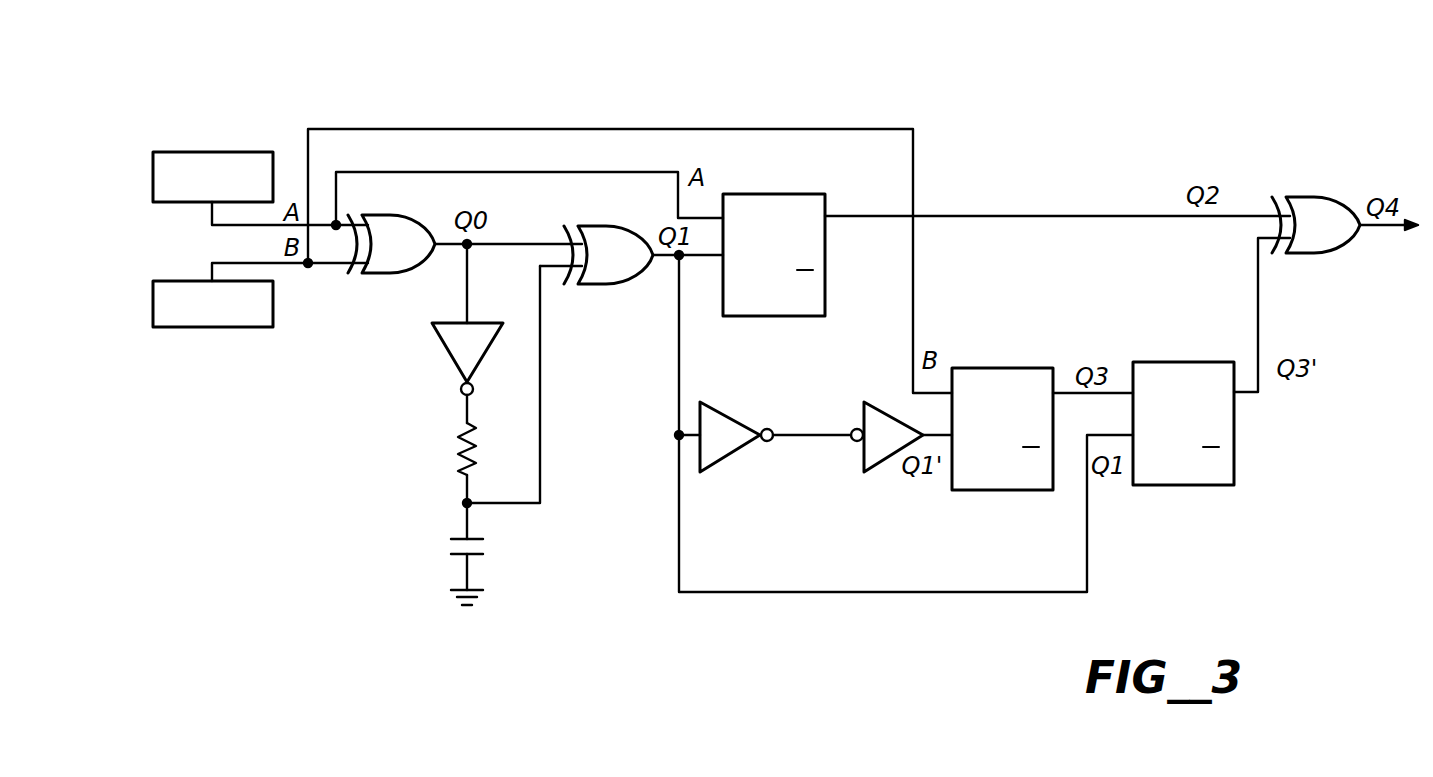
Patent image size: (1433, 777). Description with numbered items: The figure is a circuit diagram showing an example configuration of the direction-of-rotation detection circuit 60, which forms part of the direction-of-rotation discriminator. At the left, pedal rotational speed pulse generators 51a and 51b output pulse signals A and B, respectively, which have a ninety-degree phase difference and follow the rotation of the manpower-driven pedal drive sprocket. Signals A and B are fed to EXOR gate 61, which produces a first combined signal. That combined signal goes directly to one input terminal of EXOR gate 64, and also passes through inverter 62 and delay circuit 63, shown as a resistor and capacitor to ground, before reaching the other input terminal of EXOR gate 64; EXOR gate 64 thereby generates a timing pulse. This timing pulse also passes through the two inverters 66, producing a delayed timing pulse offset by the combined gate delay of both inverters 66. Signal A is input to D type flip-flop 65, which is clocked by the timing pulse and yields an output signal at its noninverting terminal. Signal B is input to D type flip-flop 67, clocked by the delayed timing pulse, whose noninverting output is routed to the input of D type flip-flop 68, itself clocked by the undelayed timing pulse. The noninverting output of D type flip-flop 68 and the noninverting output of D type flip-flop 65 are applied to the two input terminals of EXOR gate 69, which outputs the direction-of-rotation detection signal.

The pedal rotational speed pulse generator 51a is at (212, 152).
The pedal rotational speed pulse generator 51b is at (193, 327).
The direction-of-rotation detection circuit 60 is at (1021, 118).
The EXOR gate 61 is at (370, 275).
The inverter 62 is at (440, 342).
The delay circuit 63 is at (441, 498).
The EXOR gate 64 is at (593, 284).
The D type flip-flop 65 is at (785, 194).
The inverters 66 is at (855, 458).
The D type flip-flop 67 is at (1000, 368).
The D type flip-flop 68 is at (1172, 362).
The EXOR gate 69 is at (1315, 253).